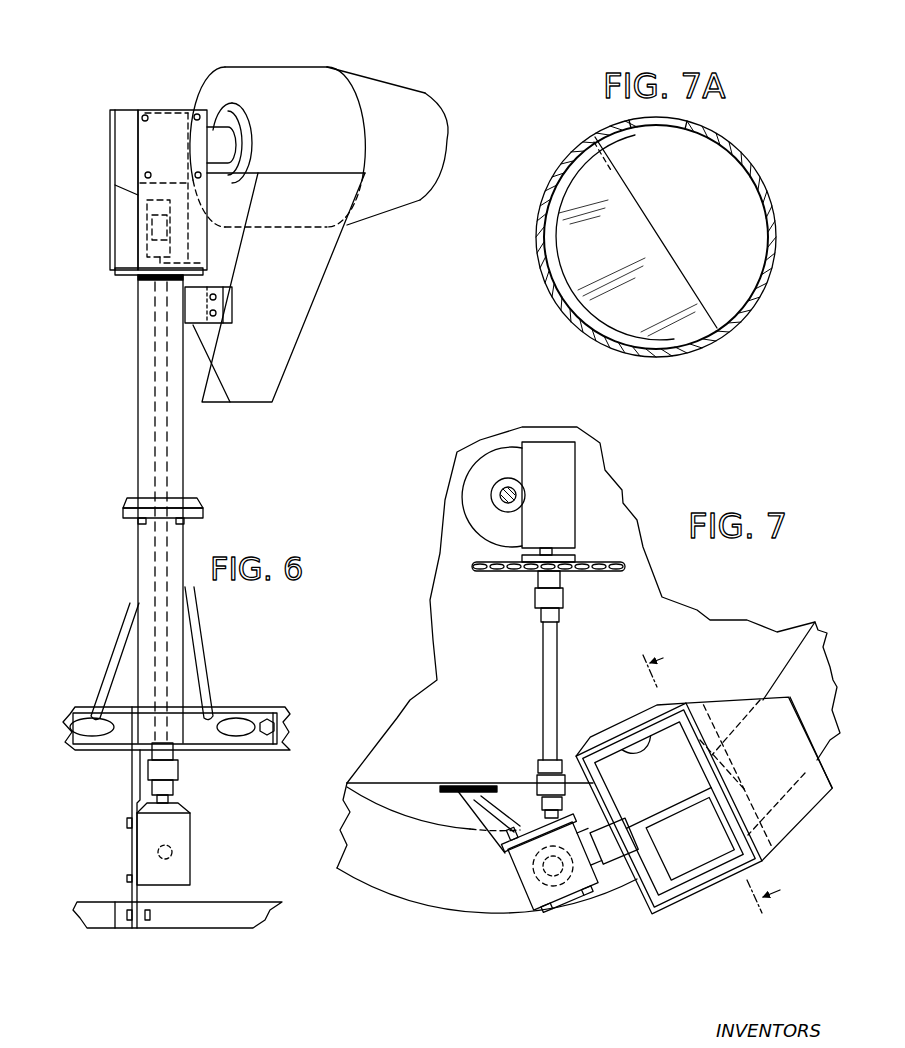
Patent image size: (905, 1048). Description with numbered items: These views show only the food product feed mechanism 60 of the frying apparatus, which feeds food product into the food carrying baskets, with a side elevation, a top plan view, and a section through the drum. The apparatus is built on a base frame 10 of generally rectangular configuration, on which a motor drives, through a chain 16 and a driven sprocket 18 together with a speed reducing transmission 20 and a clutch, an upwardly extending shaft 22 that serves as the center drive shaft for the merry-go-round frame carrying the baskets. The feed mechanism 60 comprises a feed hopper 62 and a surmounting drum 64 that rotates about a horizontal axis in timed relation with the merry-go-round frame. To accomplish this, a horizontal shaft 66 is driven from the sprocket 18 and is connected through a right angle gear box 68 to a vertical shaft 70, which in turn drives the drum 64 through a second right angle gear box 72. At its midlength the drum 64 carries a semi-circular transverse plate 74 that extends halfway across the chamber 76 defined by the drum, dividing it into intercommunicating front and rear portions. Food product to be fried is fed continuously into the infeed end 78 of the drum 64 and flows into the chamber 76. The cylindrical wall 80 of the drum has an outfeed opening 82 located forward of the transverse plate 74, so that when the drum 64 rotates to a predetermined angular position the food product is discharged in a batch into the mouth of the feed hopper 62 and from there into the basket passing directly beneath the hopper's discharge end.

In FIG. 6, the base frame 10 is at (225, 702).
In FIG. 7, the chain 16 is at (480, 575).
In FIG. 7, the driven sprocket 18 is at (615, 574).
In FIG. 7, the speed reducing transmission 20 is at (502, 502).
In FIG. 7, the shaft 22 is at (494, 500).
In FIG. 6, the feed mechanism 60 is at (399, 78).
In FIG. 7, the feed mechanism 60 is at (672, 804).
In FIG. 6, the feed hopper 62 is at (290, 322).
In FIG. 7, the feed hopper 62 is at (650, 712).
In FIG. 6, the drum 64 is at (408, 156).
In FIG. 7A, the drum 64 is at (771, 278).
In FIG. 7, the drum 64 is at (766, 761).
In FIG. 6, the horizontal shaft 66 is at (177, 855).
In FIG. 7, the horizontal shaft 66 is at (560, 685).
In FIG. 6, the right angle gear box 68 is at (190, 862).
In FIG. 7, the right angle gear box 68 is at (575, 900).
In FIG. 6, the vertical shaft 70 is at (166, 441).
In FIG. 7, the vertical shaft 70 is at (557, 916).
In FIG. 6, the second right angle gear box 72 is at (122, 165).
In FIG. 7, the second right angle gear box 72 is at (537, 897).
In FIG. 7A, the transverse plate 74 is at (664, 280).
In FIG. 7A, the chamber 76 is at (633, 261).
In FIG. 6, the infeed end 78 is at (436, 143).
In FIG. 7, the infeed end 78 is at (790, 722).
In FIG. 6, the cylindrical wall 80 is at (309, 133).
In FIG. 7A, the cylindrical wall 80 is at (771, 243).
In FIG. 7A, the outfeed opening 82 is at (631, 122).